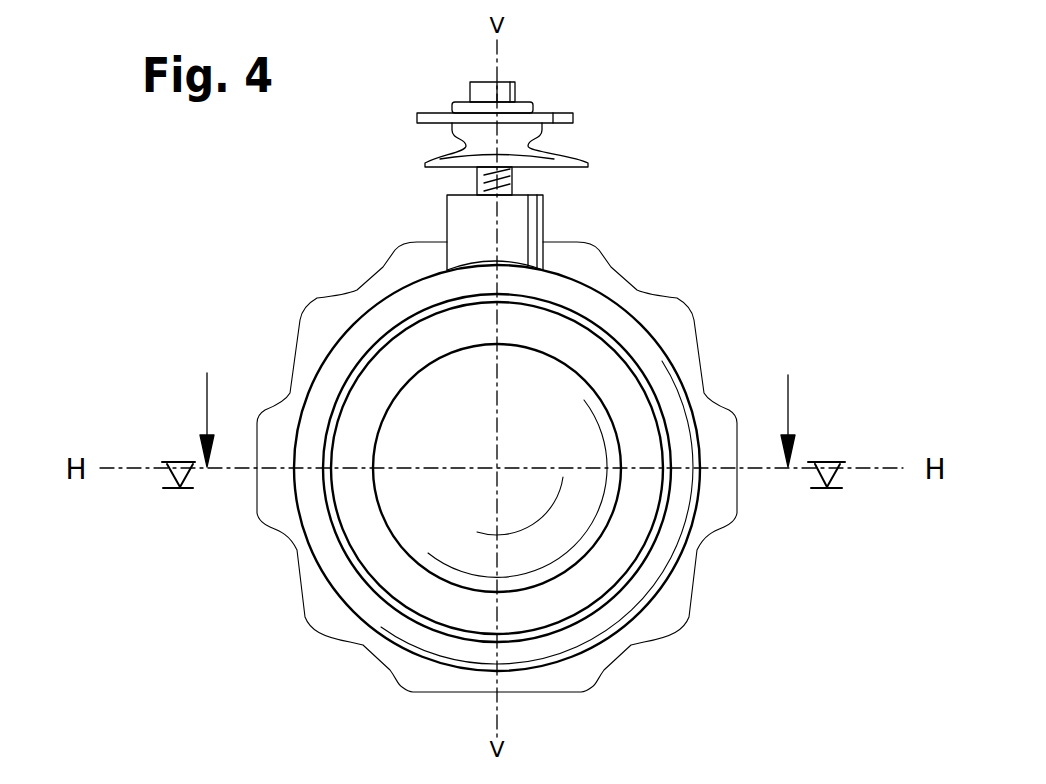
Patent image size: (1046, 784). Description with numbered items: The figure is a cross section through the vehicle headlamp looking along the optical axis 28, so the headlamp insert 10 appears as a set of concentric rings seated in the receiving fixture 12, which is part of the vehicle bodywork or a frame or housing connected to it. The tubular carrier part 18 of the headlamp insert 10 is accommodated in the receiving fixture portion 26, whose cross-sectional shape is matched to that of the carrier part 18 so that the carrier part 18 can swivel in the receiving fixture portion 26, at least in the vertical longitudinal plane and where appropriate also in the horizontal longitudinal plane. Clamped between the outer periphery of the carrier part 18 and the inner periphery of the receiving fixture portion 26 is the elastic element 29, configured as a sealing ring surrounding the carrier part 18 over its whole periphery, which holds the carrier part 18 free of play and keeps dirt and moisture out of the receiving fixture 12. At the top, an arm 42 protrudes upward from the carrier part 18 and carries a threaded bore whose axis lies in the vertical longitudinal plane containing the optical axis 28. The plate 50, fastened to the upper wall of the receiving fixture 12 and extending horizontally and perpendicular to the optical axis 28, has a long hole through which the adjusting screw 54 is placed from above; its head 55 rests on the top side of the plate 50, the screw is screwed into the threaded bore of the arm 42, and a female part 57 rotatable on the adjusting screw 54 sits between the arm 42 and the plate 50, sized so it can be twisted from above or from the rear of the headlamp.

The headlamp insert 10 is at (442, 411).
The receiving fixture 12 is at (688, 362).
The carrier part 18 is at (623, 357).
The receiving fixture portion 26 is at (640, 614).
The optical axis 28 is at (493, 507).
The elastic element 29 is at (682, 520).
The arm 42 is at (457, 222).
The plate 50 is at (568, 117).
The adjusting screw 54 is at (513, 180).
The head 55 is at (510, 92).
The female part 57 is at (550, 164).